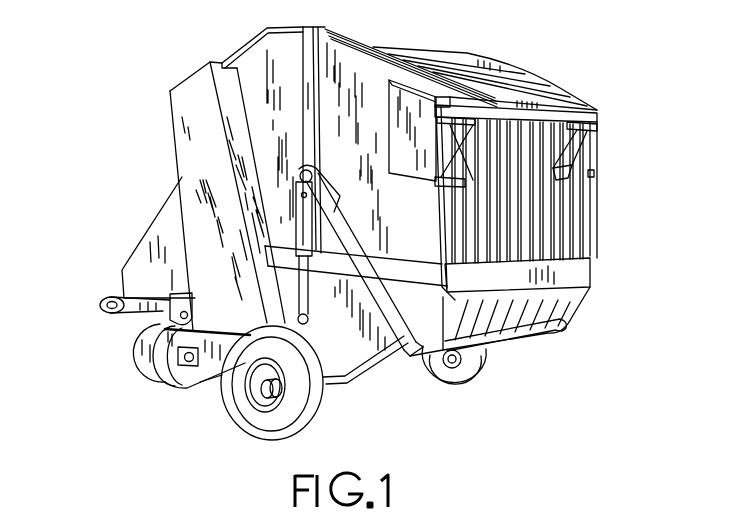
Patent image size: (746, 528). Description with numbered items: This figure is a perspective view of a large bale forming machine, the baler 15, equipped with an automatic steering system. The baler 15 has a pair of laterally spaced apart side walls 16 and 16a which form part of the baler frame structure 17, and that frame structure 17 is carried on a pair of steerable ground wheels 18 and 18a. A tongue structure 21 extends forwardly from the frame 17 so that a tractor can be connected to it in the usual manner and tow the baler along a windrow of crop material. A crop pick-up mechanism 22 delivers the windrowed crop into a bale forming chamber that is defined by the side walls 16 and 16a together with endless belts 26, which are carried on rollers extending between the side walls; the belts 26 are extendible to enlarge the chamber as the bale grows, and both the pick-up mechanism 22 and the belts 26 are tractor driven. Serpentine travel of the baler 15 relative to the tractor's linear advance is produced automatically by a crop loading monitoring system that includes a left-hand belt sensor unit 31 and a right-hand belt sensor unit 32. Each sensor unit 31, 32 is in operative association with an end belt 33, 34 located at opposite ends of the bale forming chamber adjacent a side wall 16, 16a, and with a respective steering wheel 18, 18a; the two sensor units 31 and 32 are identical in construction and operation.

The baler 15 is at (200, 97).
The side wall 16 is at (352, 72).
The side wall 16a is at (530, 90).
The baler frame structure 17 is at (394, 350).
The steerable ground wheel 18 is at (302, 420).
The steerable ground wheel 18a is at (472, 375).
The tongue structure 21 is at (112, 300).
The crop pick-up mechanism 22 is at (160, 377).
The endless belts 26 is at (550, 230).
The left-hand belt sensor unit 31 is at (427, 190).
The right-hand belt sensor unit 32 is at (601, 159).
The end belt 33 is at (446, 242).
The end belt 34 is at (562, 207).